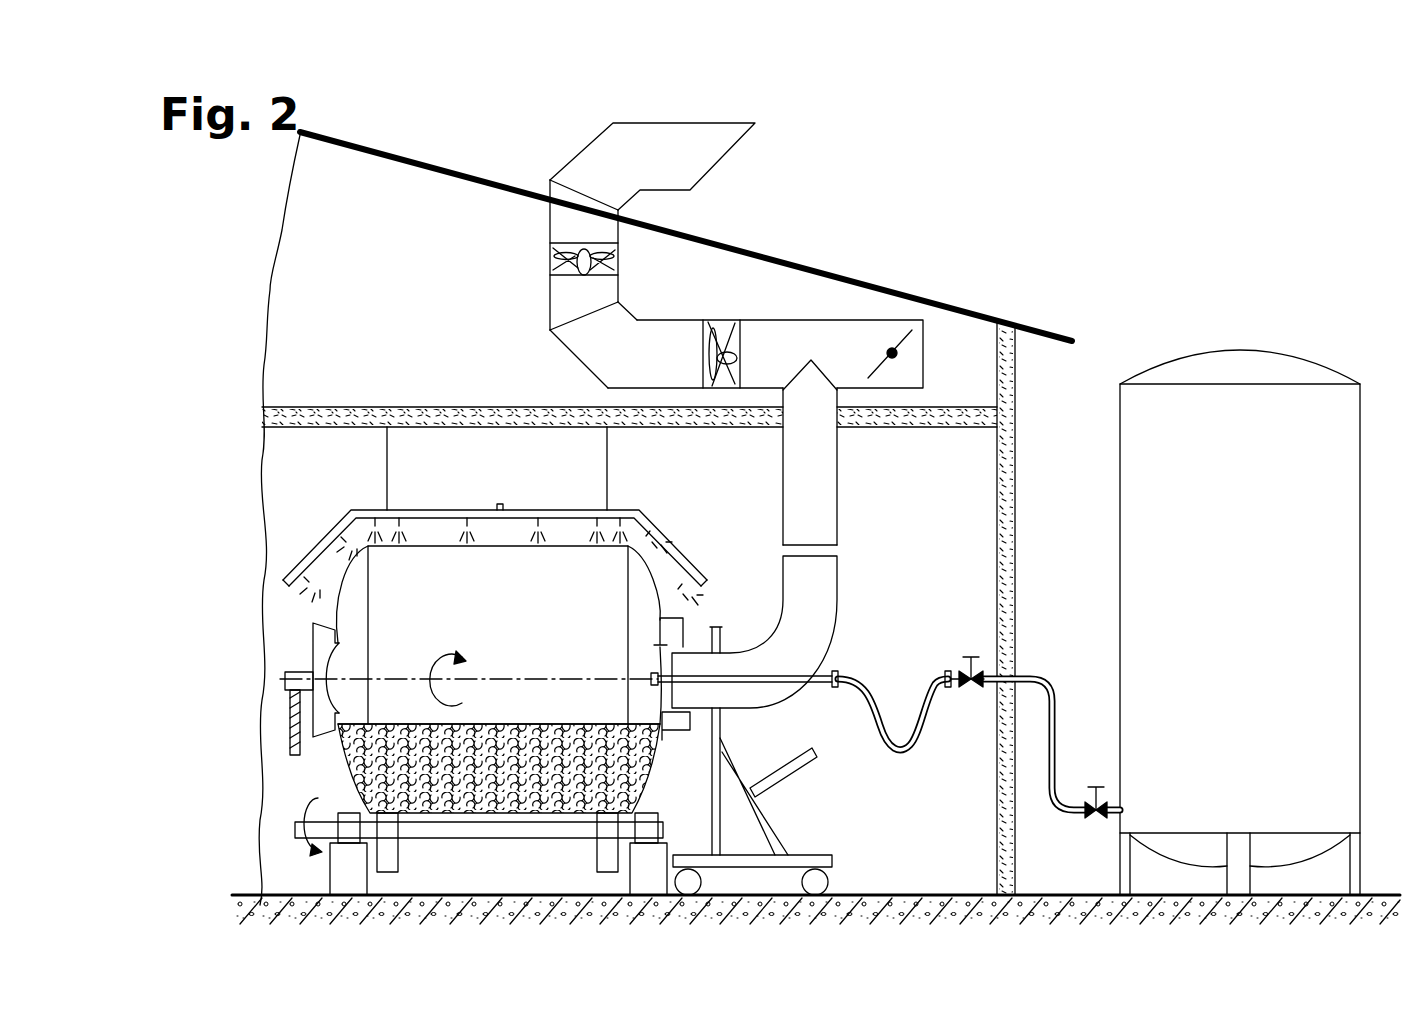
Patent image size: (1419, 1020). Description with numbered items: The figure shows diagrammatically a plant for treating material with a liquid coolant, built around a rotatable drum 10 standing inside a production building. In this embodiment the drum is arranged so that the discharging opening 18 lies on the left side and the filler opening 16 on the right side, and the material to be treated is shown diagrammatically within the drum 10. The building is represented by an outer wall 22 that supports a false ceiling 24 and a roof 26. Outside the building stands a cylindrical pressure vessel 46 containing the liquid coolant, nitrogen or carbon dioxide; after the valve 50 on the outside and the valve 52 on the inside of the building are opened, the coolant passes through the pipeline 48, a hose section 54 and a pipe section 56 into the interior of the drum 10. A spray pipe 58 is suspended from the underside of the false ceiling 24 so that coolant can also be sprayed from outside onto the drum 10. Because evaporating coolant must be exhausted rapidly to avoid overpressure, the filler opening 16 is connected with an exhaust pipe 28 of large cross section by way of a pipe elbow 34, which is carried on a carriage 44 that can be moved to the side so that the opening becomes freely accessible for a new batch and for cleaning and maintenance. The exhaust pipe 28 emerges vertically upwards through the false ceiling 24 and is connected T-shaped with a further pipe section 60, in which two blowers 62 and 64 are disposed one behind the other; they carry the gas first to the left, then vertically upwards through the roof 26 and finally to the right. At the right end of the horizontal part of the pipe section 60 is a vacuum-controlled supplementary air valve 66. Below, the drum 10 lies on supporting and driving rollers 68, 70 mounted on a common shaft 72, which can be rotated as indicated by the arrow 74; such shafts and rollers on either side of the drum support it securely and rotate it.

The drum 10 is at (665, 618).
The filler opening 16 is at (690, 717).
The discharging opening 18 is at (313, 650).
The outer wall 22 is at (1010, 527).
The false ceiling 24 is at (937, 432).
The roof 26 is at (850, 278).
The exhaust pipe 28 is at (793, 487).
The pipe elbow 34 is at (825, 628).
The carriage 44 is at (830, 855).
The cylindrical pressure vessel 46 is at (1240, 384).
The pipeline 48 is at (1052, 720).
The valve 50 is at (1097, 787).
The valve 52 is at (972, 657).
The hose section 54 is at (913, 741).
The pipe section 56 is at (805, 688).
The spray pipe 58 is at (675, 548).
The pipe section 60 is at (768, 328).
The blower 62 is at (720, 330).
The blower 64 is at (550, 250).
The vacuum-controlled supplementary air valve 66 is at (900, 354).
The supporting and driving roller 68 is at (398, 850).
The supporting and driving roller 70 is at (597, 853).
The shaft 72 is at (505, 830).
The arrow 74 is at (302, 848).